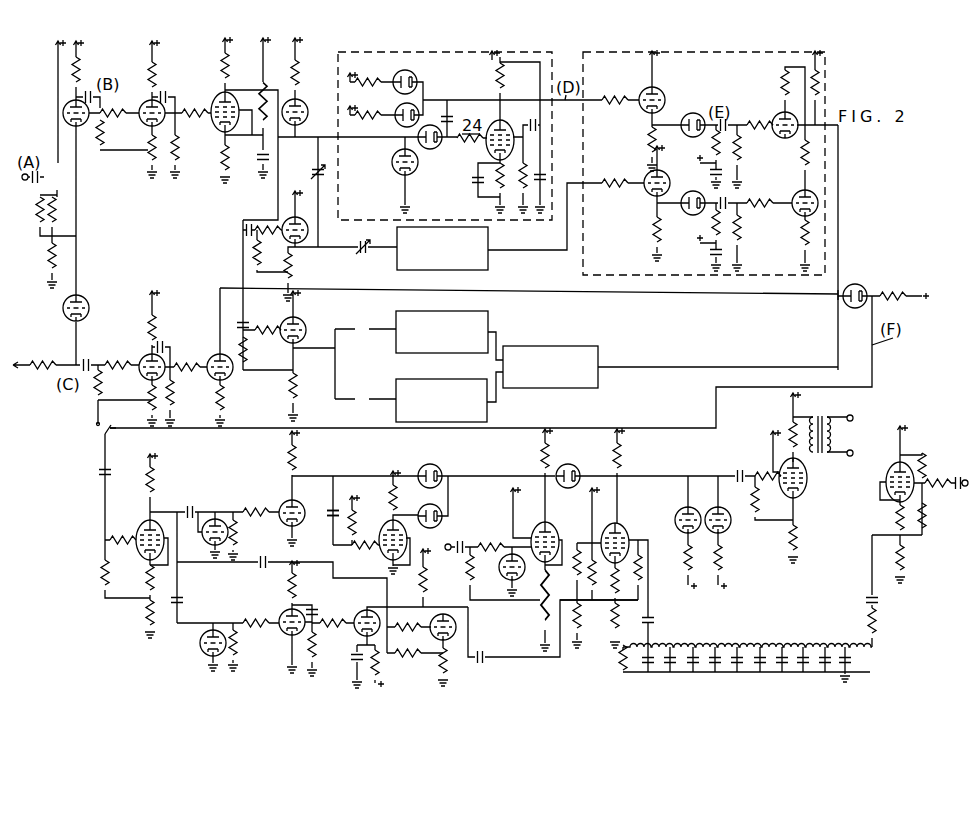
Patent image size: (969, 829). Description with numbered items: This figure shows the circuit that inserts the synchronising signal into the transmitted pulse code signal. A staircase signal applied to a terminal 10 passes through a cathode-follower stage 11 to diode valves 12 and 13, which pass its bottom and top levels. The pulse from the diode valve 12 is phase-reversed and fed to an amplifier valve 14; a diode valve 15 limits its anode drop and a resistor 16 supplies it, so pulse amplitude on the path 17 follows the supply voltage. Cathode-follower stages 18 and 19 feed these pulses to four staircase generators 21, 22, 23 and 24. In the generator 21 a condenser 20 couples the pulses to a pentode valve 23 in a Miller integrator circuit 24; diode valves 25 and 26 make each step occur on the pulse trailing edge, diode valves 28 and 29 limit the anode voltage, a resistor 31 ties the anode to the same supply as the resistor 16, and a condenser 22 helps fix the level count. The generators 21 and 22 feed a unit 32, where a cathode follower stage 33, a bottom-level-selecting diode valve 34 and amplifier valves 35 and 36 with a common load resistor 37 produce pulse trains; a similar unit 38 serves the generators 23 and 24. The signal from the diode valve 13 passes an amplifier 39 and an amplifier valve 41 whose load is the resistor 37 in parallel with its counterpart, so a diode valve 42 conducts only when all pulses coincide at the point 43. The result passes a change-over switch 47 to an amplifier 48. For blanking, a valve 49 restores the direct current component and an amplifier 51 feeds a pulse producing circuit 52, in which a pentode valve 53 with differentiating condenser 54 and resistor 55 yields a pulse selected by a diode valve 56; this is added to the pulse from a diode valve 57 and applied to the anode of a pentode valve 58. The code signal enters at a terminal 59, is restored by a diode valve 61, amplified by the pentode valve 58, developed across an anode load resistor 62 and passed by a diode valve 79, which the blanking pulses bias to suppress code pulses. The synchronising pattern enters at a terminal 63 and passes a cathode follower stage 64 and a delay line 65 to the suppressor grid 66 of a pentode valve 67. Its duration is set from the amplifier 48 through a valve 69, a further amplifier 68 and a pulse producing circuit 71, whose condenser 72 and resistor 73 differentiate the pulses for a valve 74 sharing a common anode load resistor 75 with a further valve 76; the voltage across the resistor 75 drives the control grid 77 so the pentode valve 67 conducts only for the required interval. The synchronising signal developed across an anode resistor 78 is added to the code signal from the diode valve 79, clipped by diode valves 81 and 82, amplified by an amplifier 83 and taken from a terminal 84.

The terminal 10 is at (24, 181).
The cathode-follower stage 11 is at (48, 228).
The diode valve 12 is at (63, 110).
The diode valve 13 is at (88, 304).
The amplifier valve 14 is at (223, 128).
The diode valve 15 is at (308, 113).
The resistor 16 is at (222, 72).
The path 17 is at (279, 153).
The cathode-follower stage 18 is at (280, 265).
The cathode-follower stage 19 is at (272, 361).
The condenser 20 is at (312, 174).
The staircase generator 21 is at (356, 226).
The staircase generator 22 is at (451, 259).
The pentode valve 23 is at (451, 343).
The Miller integrator circuit 24 is at (451, 412).
The diode valve 25 is at (415, 171).
The diode valve 26 is at (438, 149).
The diode valve 28 is at (395, 73).
The diode valve 29 is at (396, 108).
The resistor 31 is at (505, 77).
The unit 32 is at (692, 275).
The cathode follower stage 33 is at (618, 155).
The diode valve 34 is at (688, 104).
The amplifier valve 35 is at (775, 115).
The amplifier valve 36 is at (818, 199).
The common load resistor 37 is at (821, 90).
The unit 38 is at (557, 377).
The amplifier 39 is at (128, 396).
The amplifier valve 41 is at (216, 380).
The diode valve 42 is at (857, 285).
The point 43 is at (836, 299).
The change-over switch 47 is at (97, 432).
The amplifier 48 is at (133, 581).
The valve 49 is at (205, 541).
The amplifier 51 is at (268, 543).
The pulse producing circuit 52 is at (381, 568).
The pentode valve 53 is at (408, 531).
The condenser 54 is at (331, 508).
The resistor 55 is at (356, 516).
The diode valve 56 is at (443, 512).
The diode valve 57 is at (440, 470).
The pentode valve 58 is at (553, 531).
The terminal 59 is at (451, 544).
The diode valve 61 is at (500, 567).
The anode load resistor 62 is at (550, 460).
The terminal 63 is at (962, 481).
The cathode follower stage 64 is at (904, 495).
The delay line 65 is at (751, 696).
The suppressor grid 66 is at (631, 541).
The pentode valve 67 is at (619, 526).
The further amplifier 68 is at (263, 614).
The valve 69 is at (198, 650).
The pulse producing circuit 71 is at (342, 647).
The condenser 72 is at (315, 607).
The resistor 73 is at (310, 648).
The valve 74 is at (361, 612).
The common anode load resistor 75 is at (427, 582).
The further valve 76 is at (444, 645).
The control grid 77 is at (617, 575).
The anode resistor 78 is at (620, 460).
The diode valve 79 is at (574, 468).
The diode valve 81 is at (679, 512).
The diode valve 82 is at (729, 515).
The amplifier 83 is at (786, 485).
The terminal 84 is at (841, 435).